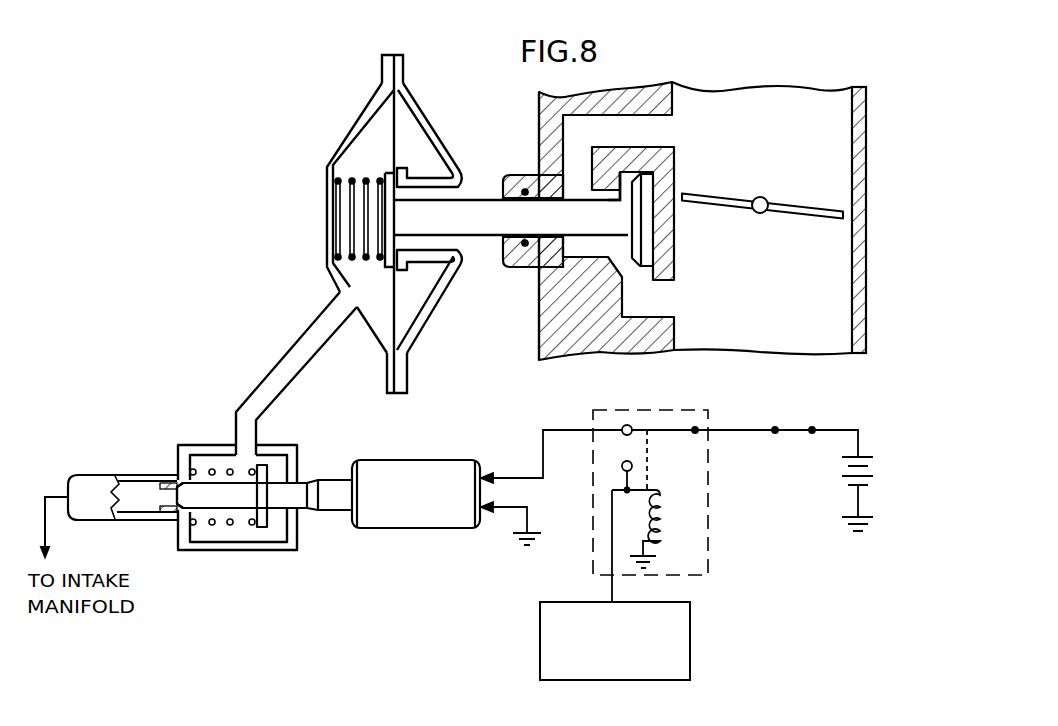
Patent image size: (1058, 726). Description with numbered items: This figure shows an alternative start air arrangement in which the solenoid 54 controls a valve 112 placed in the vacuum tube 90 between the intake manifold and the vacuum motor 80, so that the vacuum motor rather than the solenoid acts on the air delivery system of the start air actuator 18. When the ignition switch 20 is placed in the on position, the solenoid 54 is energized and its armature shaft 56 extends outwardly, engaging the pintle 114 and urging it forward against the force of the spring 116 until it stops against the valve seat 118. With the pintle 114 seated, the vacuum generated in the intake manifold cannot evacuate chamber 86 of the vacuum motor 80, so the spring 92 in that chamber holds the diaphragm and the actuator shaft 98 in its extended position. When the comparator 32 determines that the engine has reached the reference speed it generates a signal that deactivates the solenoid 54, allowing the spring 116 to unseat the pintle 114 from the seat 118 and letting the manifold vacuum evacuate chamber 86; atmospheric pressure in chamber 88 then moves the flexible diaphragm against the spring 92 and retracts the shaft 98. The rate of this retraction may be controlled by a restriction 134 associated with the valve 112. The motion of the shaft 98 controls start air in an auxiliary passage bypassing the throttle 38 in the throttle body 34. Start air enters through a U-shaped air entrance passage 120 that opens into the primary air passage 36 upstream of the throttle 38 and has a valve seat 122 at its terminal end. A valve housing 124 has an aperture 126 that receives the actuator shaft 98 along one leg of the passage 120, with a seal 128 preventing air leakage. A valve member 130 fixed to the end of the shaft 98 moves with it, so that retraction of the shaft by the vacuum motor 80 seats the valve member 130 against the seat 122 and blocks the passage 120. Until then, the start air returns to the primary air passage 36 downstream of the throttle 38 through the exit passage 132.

The start air actuator 18 is at (825, 66).
The ignition switch 20 is at (799, 426).
The comparator 32 is at (542, 660).
The throttle body 34 is at (858, 140).
The primary air passage 36 is at (760, 112).
The throttle 38 is at (700, 196).
The solenoid 54 is at (400, 480).
The armature shaft 56 is at (336, 512).
The vacuum motor 80 is at (322, 123).
The chamber 86 is at (348, 158).
The chamber 88 is at (430, 303).
The tube 90 is at (290, 348).
The spring 92 is at (341, 224).
The actuator shaft 98 is at (486, 206).
The valve 112 is at (195, 412).
The pintle 114 is at (240, 506).
The spring 116 is at (230, 524).
The valve seat 118 is at (183, 506).
The air entrance passage 120 is at (650, 139).
The valve seat 122 is at (618, 210).
The valve housing 124 is at (538, 112).
The aperture 126 is at (520, 247).
The seal 128 is at (525, 191).
The valve member 130 is at (648, 238).
The exit passage 132 is at (660, 300).
The restriction 134 is at (172, 480).